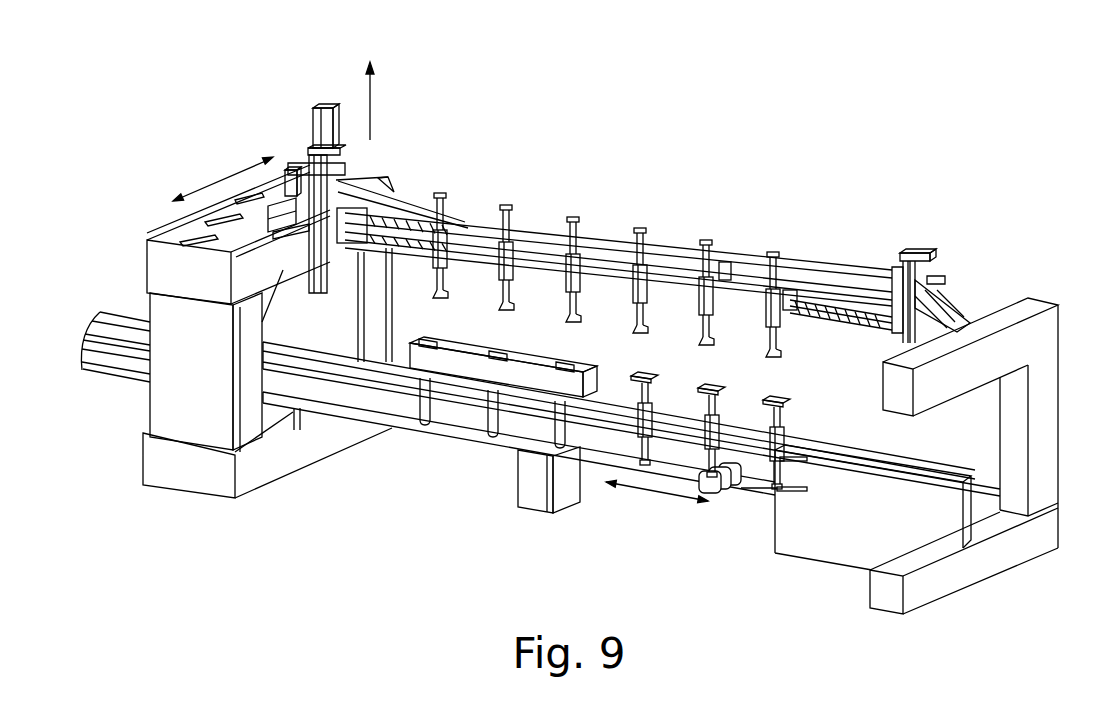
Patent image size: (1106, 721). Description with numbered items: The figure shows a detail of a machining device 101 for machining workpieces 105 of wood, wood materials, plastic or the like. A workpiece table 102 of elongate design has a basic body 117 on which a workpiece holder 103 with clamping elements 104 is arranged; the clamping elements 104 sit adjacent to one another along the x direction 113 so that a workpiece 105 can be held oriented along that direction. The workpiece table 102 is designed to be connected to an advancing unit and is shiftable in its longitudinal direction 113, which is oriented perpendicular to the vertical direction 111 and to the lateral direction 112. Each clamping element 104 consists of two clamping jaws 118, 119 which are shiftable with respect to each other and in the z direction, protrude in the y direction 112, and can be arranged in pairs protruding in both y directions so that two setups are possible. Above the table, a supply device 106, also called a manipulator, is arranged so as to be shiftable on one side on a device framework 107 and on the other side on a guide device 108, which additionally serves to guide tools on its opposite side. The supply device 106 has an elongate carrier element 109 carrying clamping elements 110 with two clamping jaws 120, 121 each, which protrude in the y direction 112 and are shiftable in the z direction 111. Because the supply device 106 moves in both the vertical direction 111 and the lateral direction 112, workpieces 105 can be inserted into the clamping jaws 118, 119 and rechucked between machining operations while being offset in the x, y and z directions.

The machining device 101 is at (852, 166).
The workpiece table 102 is at (480, 418).
The workpiece holder 103 is at (585, 350).
The clamping elements 104 is at (656, 396).
The workpiece 105 is at (477, 372).
The supply device 106 is at (746, 268).
The device framework 107 is at (997, 350).
The guide device 108 is at (182, 266).
The carrier element 109 is at (470, 238).
The clamping elements 110 is at (530, 260).
The vertical direction 111 is at (373, 66).
The lateral direction 112 is at (268, 157).
The direction 113 is at (612, 484).
The basic body 117 is at (603, 447).
The clamping jaw 118 is at (782, 428).
The clamping jaw 119 is at (771, 397).
The clamping jaw 120 is at (785, 354).
The clamping jaw 121 is at (728, 266).